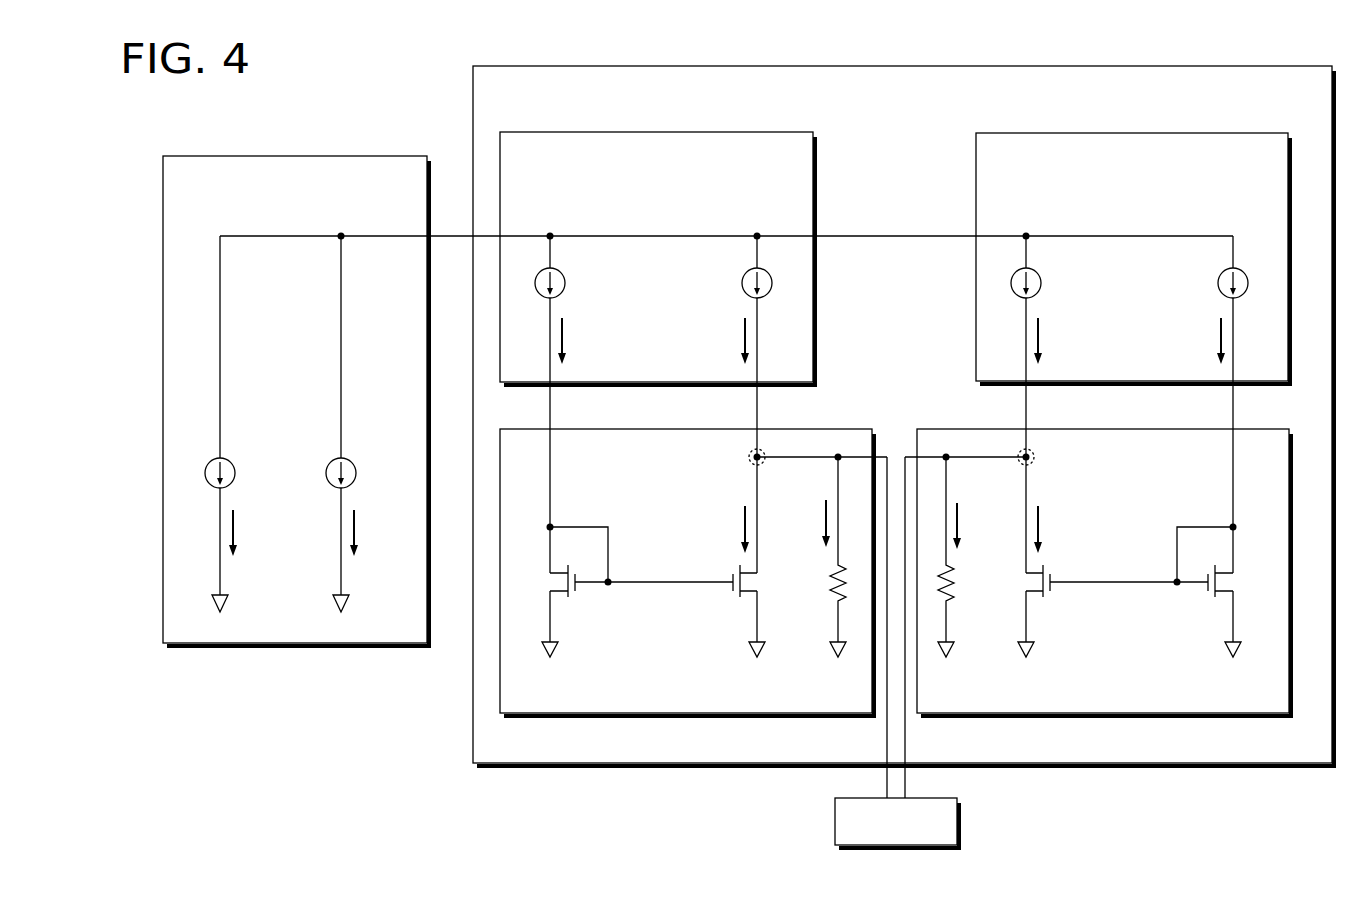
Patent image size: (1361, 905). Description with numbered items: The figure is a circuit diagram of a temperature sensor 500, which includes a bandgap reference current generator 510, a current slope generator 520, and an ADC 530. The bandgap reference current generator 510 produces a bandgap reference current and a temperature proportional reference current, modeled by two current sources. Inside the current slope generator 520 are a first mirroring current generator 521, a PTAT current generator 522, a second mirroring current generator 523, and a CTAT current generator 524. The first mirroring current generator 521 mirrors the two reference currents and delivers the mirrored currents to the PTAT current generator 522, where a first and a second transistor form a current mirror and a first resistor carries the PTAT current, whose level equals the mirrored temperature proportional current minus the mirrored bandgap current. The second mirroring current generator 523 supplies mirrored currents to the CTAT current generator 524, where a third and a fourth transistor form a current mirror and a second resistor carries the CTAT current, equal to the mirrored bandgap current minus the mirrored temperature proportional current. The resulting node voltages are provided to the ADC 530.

The temperature sensor 500 is at (1355, 53).
The bandgap reference current generator 510 is at (345, 156).
The current slope generator 520 is at (1210, 66).
The first mirroring current generator 521 is at (770, 132).
The PTAT current generator 522 is at (773, 429).
The second mirroring current generator 523 is at (1240, 133).
The CTAT current generator 524 is at (1240, 429).
The ADC 530 is at (960, 822).